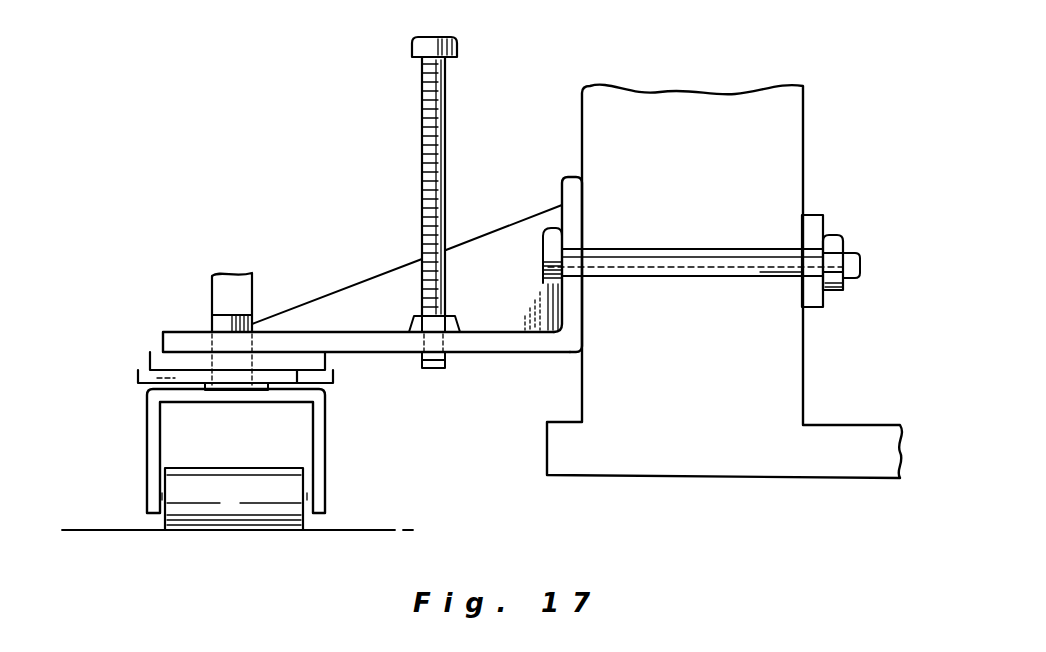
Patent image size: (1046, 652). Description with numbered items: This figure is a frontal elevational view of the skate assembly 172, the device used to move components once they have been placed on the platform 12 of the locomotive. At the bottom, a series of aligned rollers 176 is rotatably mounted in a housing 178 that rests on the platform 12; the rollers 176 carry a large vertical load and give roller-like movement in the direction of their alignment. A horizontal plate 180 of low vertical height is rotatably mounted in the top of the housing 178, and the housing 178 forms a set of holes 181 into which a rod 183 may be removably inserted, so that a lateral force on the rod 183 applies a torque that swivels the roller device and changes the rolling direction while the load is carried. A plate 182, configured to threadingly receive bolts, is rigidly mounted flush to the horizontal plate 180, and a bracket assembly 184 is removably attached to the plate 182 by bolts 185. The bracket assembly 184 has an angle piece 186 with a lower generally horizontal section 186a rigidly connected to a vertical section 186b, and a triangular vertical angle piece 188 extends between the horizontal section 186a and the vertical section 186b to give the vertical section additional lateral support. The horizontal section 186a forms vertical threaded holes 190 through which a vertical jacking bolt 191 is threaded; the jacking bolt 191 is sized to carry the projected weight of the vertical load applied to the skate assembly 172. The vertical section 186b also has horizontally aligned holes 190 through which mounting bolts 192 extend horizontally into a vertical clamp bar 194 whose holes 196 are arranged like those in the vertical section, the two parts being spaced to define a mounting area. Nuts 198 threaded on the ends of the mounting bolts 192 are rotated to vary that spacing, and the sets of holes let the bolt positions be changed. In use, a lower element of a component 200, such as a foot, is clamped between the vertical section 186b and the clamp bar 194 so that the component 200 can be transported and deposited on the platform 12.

The platform 12 is at (370, 530).
The skate assembly 172 is at (406, 430).
The rollers 176 is at (223, 505).
The housing 178 is at (325, 468).
The horizontal plate 180 is at (338, 383).
The holes 181 is at (140, 387).
The plate 182 is at (150, 362).
The rod 183 is at (250, 273).
The bracket assembly 184 is at (392, 265).
The bolts 185 is at (210, 320).
The angle piece 186 is at (313, 330).
The horizontal section 186a is at (175, 332).
The vertical section 186b is at (560, 180).
The triangular vertical angle piece 188 is at (357, 282).
The holes 190 is at (572, 247).
The vertical jacking bolt 191 is at (447, 80).
The mounting bolts 192 is at (630, 277).
The vertical clamp bar 194 is at (815, 215).
The holes 196 is at (813, 247).
The nuts 198 is at (840, 290).
The component 200 is at (707, 126).